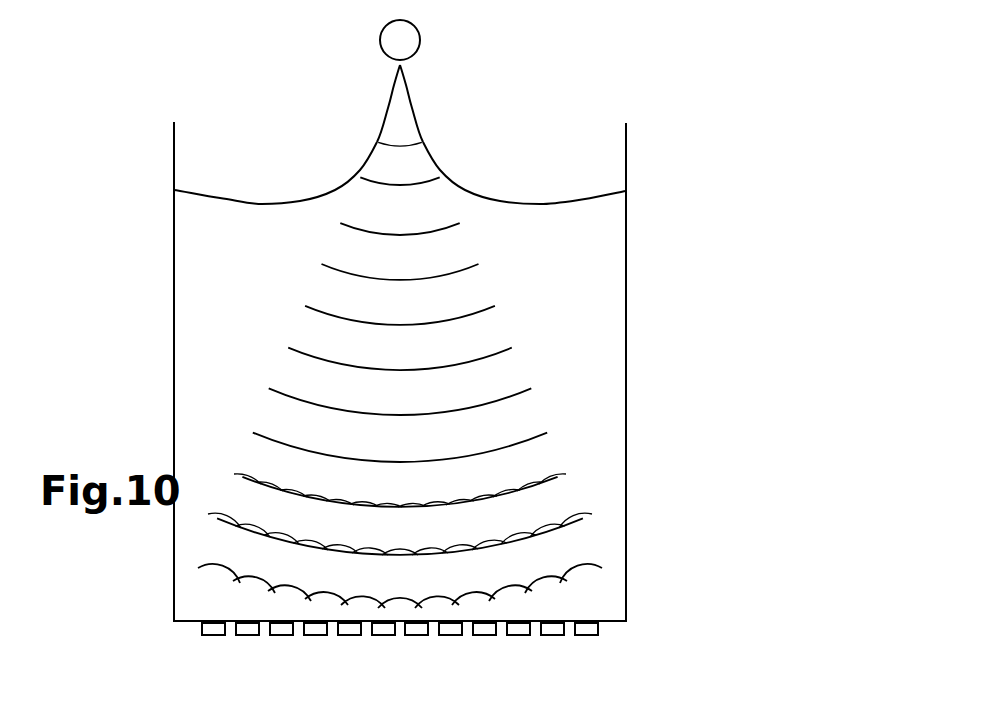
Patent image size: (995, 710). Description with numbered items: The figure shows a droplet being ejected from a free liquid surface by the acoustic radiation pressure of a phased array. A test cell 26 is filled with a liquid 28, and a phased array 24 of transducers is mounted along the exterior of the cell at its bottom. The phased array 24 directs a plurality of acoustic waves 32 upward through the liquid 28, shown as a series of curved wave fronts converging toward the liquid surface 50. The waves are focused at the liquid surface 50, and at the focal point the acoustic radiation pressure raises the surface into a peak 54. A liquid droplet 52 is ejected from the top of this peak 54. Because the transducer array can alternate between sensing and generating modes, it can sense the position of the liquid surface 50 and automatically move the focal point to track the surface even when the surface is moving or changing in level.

The phased array 24 is at (483, 636).
The test cell 26 is at (626, 393).
The liquid 28 is at (580, 315).
The acoustic waves 32 is at (318, 214).
The liquid surface 50 is at (490, 190).
The liquid droplet 52 is at (414, 24).
The peak 54 is at (412, 100).